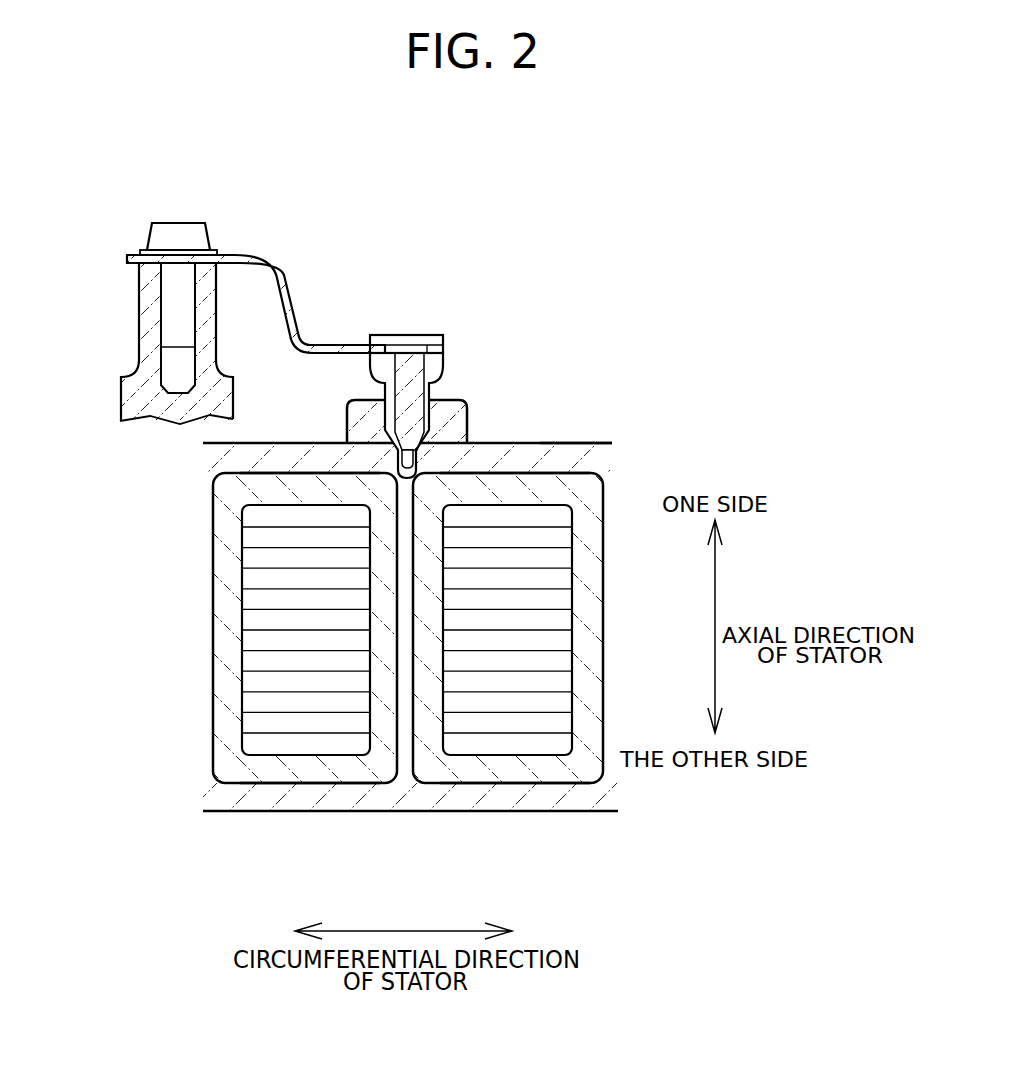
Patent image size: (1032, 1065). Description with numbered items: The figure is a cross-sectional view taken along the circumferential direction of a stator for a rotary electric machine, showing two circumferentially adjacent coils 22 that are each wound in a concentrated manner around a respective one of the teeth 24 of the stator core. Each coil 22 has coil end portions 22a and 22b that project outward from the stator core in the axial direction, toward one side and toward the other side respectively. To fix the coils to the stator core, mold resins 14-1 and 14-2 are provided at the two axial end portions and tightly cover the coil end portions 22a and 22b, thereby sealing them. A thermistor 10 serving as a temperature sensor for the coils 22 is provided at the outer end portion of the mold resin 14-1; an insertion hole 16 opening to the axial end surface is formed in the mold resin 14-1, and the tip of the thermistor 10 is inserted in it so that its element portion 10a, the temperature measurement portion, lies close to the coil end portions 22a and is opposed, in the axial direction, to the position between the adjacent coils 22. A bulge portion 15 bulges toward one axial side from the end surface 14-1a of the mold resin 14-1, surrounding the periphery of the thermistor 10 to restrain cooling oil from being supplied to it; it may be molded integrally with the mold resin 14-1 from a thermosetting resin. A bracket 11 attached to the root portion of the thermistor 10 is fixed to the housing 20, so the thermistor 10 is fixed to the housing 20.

The thermistor 10 is at (400, 334).
The element portion 10a is at (400, 456).
The bracket 11 is at (278, 279).
The mold resin 14-1 is at (530, 447).
The one end surface of the mold resin 14-1a is at (577, 447).
The mold resin 14-2 is at (480, 802).
The bulge portion 15 is at (431, 422).
The insertion hole 16 is at (469, 404).
The housing 20 is at (150, 317).
The coil 22 is at (228, 604).
The coil end portion 22a is at (277, 488).
The coil end portion 22b is at (278, 775).
The tooth 24 is at (265, 645).